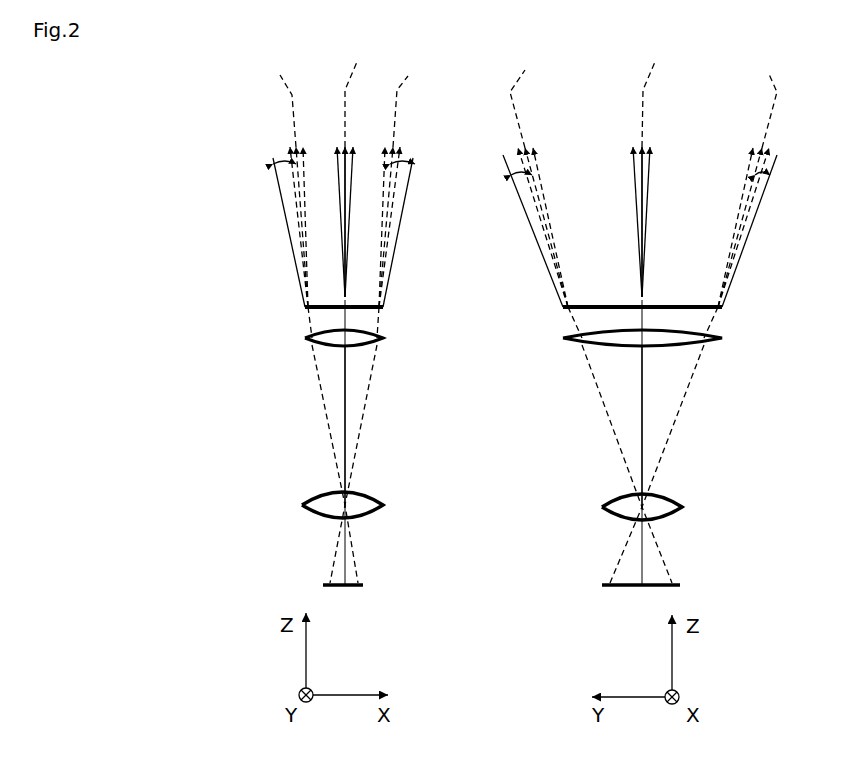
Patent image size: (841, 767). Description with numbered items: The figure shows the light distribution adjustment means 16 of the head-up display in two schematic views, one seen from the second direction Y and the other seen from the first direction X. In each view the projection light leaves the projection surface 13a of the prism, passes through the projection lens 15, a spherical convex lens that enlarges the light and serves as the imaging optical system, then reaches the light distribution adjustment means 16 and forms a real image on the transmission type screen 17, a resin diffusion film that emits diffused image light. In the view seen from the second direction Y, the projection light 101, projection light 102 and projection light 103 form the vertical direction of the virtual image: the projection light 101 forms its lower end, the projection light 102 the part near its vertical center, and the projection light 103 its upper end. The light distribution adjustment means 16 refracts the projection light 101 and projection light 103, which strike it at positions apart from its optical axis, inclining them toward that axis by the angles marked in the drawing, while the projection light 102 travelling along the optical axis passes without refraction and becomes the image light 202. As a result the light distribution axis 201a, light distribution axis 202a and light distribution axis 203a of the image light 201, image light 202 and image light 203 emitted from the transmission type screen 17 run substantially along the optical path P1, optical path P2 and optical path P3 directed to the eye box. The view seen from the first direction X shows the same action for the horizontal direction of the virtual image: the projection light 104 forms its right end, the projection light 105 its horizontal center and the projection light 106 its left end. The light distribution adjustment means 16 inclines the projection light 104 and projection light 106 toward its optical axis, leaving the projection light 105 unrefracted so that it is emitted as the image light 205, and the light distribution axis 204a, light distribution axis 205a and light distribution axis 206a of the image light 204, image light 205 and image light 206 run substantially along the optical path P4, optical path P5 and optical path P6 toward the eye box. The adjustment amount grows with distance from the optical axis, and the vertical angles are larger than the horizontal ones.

The projection surface 13a is at (363, 583).
The projection lens 15 is at (383, 505).
The light distribution adjustment means 16 is at (380, 340).
The transmission type screen 17 is at (383, 308).
The projection light 101 is at (322, 414).
The projection light 102 is at (343, 367).
The projection light 103 is at (367, 430).
The projection light 104 is at (617, 464).
The projection light 105 is at (642, 375).
The projection light 106 is at (675, 415).
The image light 201 is at (285, 143).
The light distribution axis 201a is at (288, 208).
The image light 202 is at (333, 140).
The light distribution axis 202a is at (340, 157).
The image light 203 is at (405, 138).
The light distribution axis 203a is at (400, 238).
The image light 204 is at (535, 140).
The light distribution axis 204a is at (558, 212).
The image light 205 is at (628, 140).
The light distribution axis 205a is at (635, 162).
The image light 206 is at (750, 140).
The light distribution axis 206a is at (753, 170).
The optical path P1 is at (274, 99).
The optical path P2 is at (359, 92).
The optical path P3 is at (411, 99).
The optical path P4 is at (527, 96).
The optical path P5 is at (656, 92).
The optical path P6 is at (759, 99).